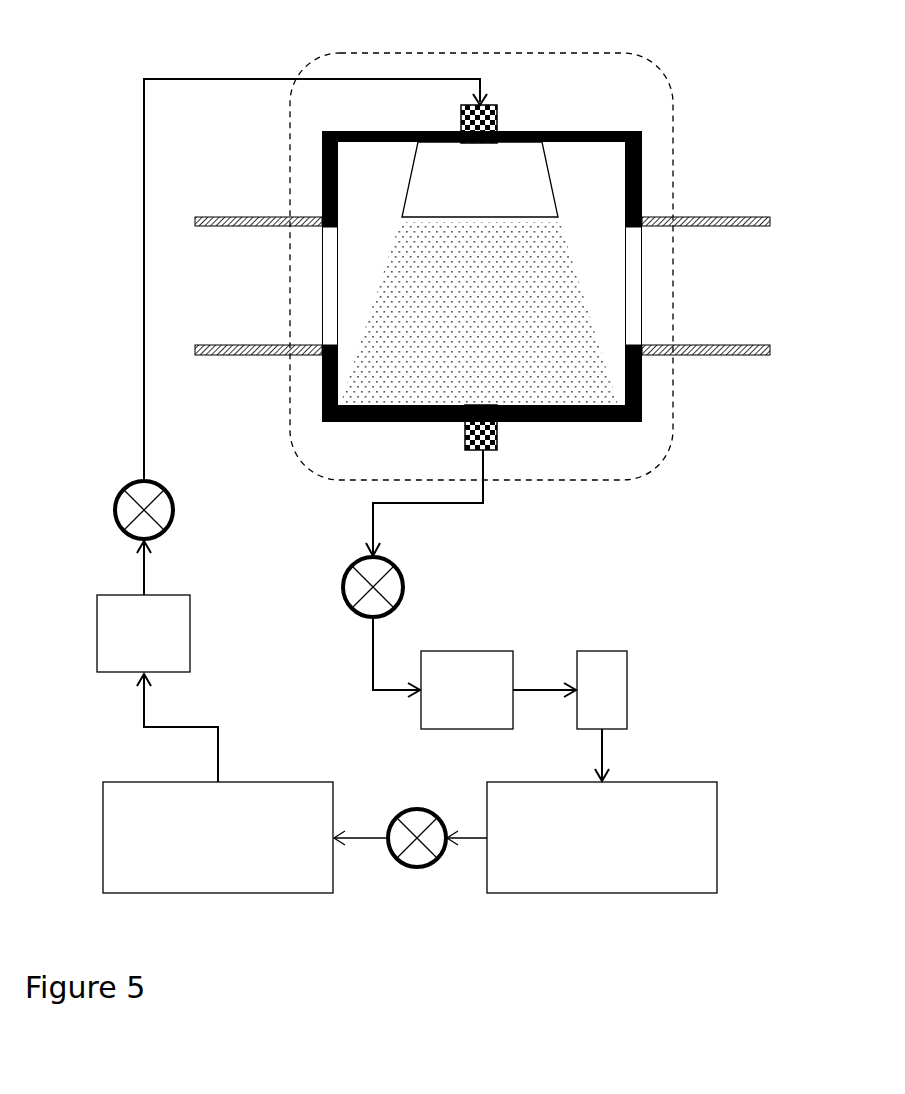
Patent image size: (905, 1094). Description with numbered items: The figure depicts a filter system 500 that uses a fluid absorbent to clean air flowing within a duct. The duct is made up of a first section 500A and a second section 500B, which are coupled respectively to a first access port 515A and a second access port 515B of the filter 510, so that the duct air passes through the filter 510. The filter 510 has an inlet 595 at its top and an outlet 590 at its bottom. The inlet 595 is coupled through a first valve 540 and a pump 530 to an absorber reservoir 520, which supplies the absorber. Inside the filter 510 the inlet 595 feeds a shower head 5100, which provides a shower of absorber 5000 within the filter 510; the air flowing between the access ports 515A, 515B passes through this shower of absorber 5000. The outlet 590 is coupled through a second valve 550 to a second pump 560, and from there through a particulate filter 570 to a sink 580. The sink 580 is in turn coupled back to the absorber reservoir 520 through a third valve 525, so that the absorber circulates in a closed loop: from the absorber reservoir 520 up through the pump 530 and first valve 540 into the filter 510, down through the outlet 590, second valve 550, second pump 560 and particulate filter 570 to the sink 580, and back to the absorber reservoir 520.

The filter system 500 is at (524, 342).
The first section 500A is at (699, 258).
The second section 500B is at (228, 270).
The filter 510 is at (482, 220).
The absorber 5000 is at (552, 298).
The shower head 5100 is at (510, 168).
The first access port 515A is at (636, 313).
The second access port 515B is at (327, 300).
The absorber reservoir 520 is at (218, 837).
The third valve 525 is at (417, 854).
The pump 530 is at (143, 633).
The first valve 540 is at (119, 510).
The second valve 550 is at (349, 587).
The second pump 560 is at (467, 690).
The particulate filter 570 is at (625, 690).
The sink 580 is at (602, 837).
The outlet 590 is at (465, 437).
The inlet 595 is at (461, 114).